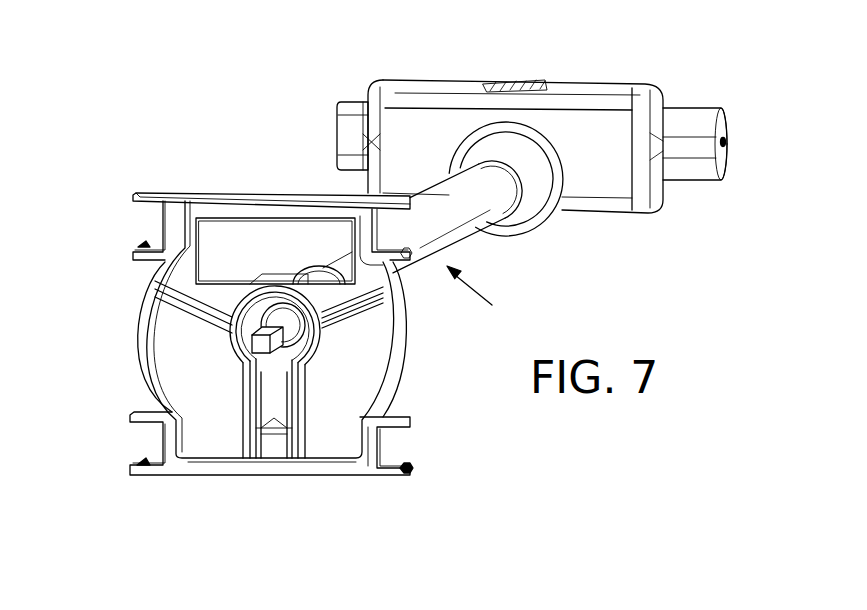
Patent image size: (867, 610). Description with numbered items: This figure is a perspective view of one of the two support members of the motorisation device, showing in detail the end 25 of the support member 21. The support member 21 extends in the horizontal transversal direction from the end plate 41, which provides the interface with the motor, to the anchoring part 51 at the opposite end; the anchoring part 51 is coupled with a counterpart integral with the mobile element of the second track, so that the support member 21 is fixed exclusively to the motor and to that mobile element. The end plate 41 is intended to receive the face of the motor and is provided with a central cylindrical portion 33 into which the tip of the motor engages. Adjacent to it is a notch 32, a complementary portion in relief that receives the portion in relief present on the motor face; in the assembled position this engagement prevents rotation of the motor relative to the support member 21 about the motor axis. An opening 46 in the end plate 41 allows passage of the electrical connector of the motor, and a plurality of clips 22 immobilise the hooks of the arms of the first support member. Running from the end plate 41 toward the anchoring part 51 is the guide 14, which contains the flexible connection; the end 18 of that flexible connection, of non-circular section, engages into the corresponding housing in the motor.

The guide 14 is at (453, 218).
The end of the flexible connection 18 is at (254, 342).
The support member 21 is at (488, 295).
The clips 22 is at (140, 245).
The end of the support member 25 is at (121, 347).
The notch 32 is at (281, 412).
The central cylindrical portion 33 is at (307, 347).
The end plate 41 is at (226, 395).
The opening 46 is at (240, 240).
The anchoring part 51 is at (607, 87).